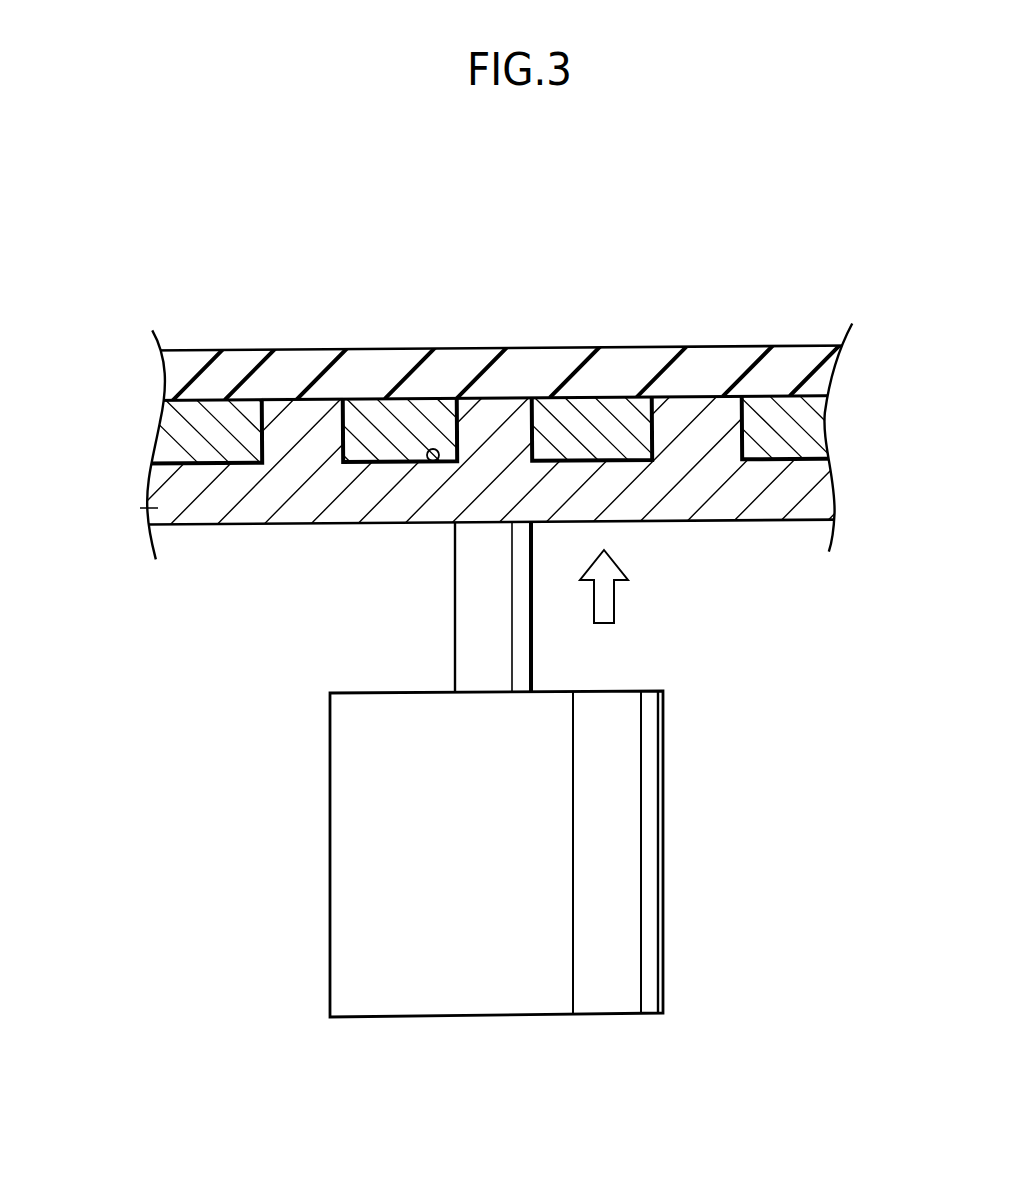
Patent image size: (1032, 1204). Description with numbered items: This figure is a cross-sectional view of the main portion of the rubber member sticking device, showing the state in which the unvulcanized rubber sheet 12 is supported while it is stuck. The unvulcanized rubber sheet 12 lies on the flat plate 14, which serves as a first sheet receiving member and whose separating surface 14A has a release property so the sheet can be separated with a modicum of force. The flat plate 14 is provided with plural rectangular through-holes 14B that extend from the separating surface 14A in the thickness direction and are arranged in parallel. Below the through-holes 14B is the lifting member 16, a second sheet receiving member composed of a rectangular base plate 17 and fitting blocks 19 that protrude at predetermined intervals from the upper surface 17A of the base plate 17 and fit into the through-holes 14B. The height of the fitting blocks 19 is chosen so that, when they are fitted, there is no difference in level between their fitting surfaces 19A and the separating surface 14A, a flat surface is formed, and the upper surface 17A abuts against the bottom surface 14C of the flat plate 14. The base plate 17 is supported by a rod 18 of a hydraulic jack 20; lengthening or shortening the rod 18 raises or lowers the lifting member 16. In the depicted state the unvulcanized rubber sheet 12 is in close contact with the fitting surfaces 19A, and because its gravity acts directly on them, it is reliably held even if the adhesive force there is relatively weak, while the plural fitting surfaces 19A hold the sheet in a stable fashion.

The unvulcanized rubber sheet 12 is at (693, 367).
The flat plate 14 is at (448, 398).
The separating surface 14A is at (438, 422).
The through-holes 14B is at (298, 398).
The bottom surface 14C is at (426, 462).
The lifting member 16 is at (255, 499).
The base plate 17 is at (158, 508).
The upper surface 17A is at (368, 467).
The rod 18 is at (466, 620).
The fitting blocks 19 is at (300, 425).
The fitting surfaces 19A is at (243, 403).
The hydraulic jack 20 is at (330, 839).